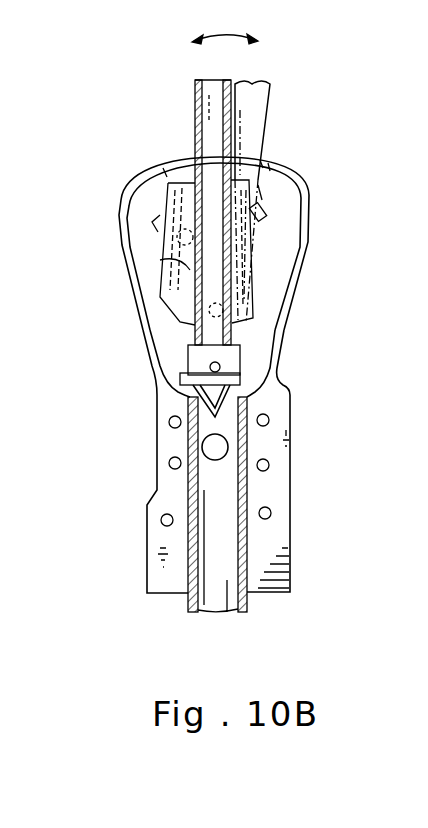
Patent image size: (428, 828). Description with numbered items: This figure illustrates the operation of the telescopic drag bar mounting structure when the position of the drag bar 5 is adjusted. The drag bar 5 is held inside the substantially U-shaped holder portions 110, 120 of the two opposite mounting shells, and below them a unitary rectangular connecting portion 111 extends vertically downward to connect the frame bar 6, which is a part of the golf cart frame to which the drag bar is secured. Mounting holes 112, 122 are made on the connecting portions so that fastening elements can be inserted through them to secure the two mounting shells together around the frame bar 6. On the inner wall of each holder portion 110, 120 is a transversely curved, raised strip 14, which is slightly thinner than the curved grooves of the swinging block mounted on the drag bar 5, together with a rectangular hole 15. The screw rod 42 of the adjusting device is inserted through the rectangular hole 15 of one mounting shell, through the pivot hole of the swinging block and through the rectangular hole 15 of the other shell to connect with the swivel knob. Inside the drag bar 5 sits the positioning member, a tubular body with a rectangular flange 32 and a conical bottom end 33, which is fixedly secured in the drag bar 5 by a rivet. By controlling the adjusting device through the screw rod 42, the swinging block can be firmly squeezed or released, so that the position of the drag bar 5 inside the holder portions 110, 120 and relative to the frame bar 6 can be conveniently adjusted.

The drag bar 5 is at (196, 110).
The frame bar 6 is at (228, 612).
The transversely curved, raised strip 14 is at (266, 208).
The rectangular hole 15 is at (160, 240).
The rectangular flange 32 is at (246, 381).
The conical bottom end 33 is at (270, 418).
The screw rod 42 is at (176, 246).
The holder portion 110 is at (297, 258).
The connecting portion 111 is at (276, 448).
The mounting holes 112 is at (267, 469).
The holder portion 120 is at (143, 183).
The mounting holes 122 is at (169, 464).